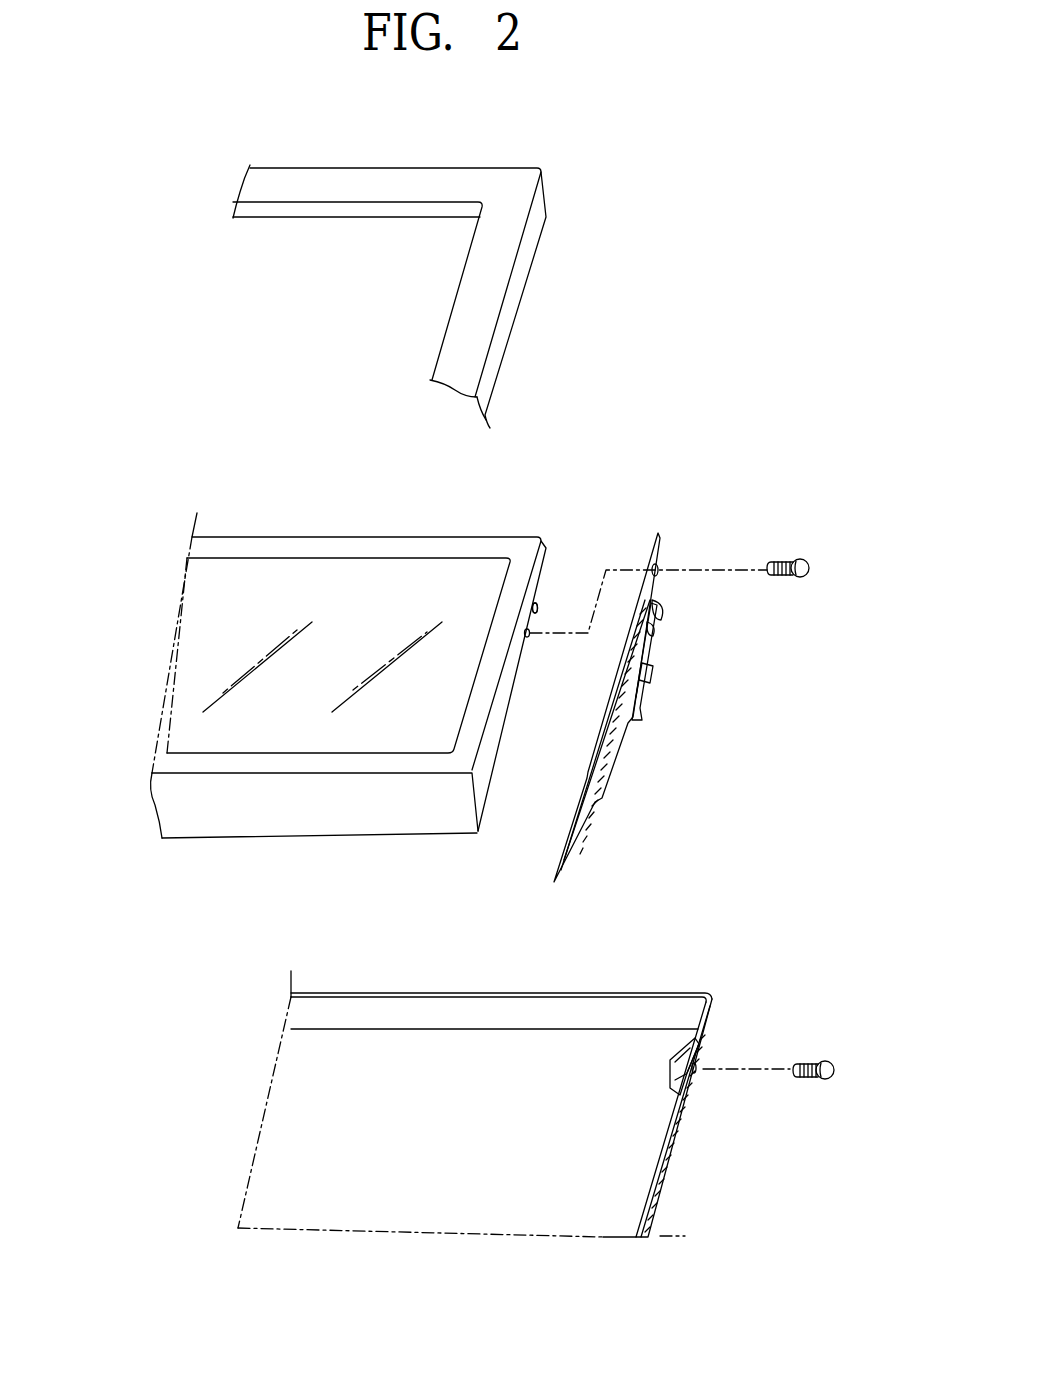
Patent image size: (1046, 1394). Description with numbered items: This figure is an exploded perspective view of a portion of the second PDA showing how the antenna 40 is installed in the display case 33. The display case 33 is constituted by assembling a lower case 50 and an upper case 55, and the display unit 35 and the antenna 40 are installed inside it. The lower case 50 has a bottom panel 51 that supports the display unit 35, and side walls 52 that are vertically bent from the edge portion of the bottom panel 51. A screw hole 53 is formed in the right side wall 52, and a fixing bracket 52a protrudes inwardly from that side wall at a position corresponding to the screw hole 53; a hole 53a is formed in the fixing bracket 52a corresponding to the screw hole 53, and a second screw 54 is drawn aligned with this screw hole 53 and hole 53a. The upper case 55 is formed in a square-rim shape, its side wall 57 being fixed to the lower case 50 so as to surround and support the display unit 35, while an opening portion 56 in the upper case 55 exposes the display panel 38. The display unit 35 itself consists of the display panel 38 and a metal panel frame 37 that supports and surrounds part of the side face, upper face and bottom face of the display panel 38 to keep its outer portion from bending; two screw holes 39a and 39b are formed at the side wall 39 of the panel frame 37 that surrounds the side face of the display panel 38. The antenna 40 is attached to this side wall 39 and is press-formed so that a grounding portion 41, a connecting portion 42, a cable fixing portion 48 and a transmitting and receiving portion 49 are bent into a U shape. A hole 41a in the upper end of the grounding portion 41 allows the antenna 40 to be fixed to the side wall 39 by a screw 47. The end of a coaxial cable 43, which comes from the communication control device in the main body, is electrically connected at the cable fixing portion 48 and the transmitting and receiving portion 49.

The display case 33 is at (366, 258).
The display unit 35 is at (459, 709).
The panel frame 37 is at (467, 541).
The display panel 38 is at (347, 604).
The side wall 39 is at (538, 600).
The screw hole 39a is at (528, 638).
The screw hole 39b is at (538, 607).
The antenna 40 is at (662, 669).
The grounding portion 41 is at (663, 548).
The hole 41a is at (661, 571).
The connecting portion 42 is at (611, 749).
The coaxial cable 43 is at (663, 607).
The screw 47 is at (799, 559).
The cable fixing portion 48 is at (652, 666).
The transmitting and receiving portion 49 is at (642, 679).
The lower case 50 is at (514, 1071).
The bottom panel 51 is at (494, 1079).
The side wall 52 is at (660, 1193).
The fixing bracket 52a is at (668, 1067).
The screw hole 53 is at (700, 1063).
The hole 53a is at (685, 1083).
The screw 54 is at (822, 1058).
The upper case 55 is at (417, 178).
The opening portion 56 is at (352, 249).
The side wall 57 is at (522, 270).